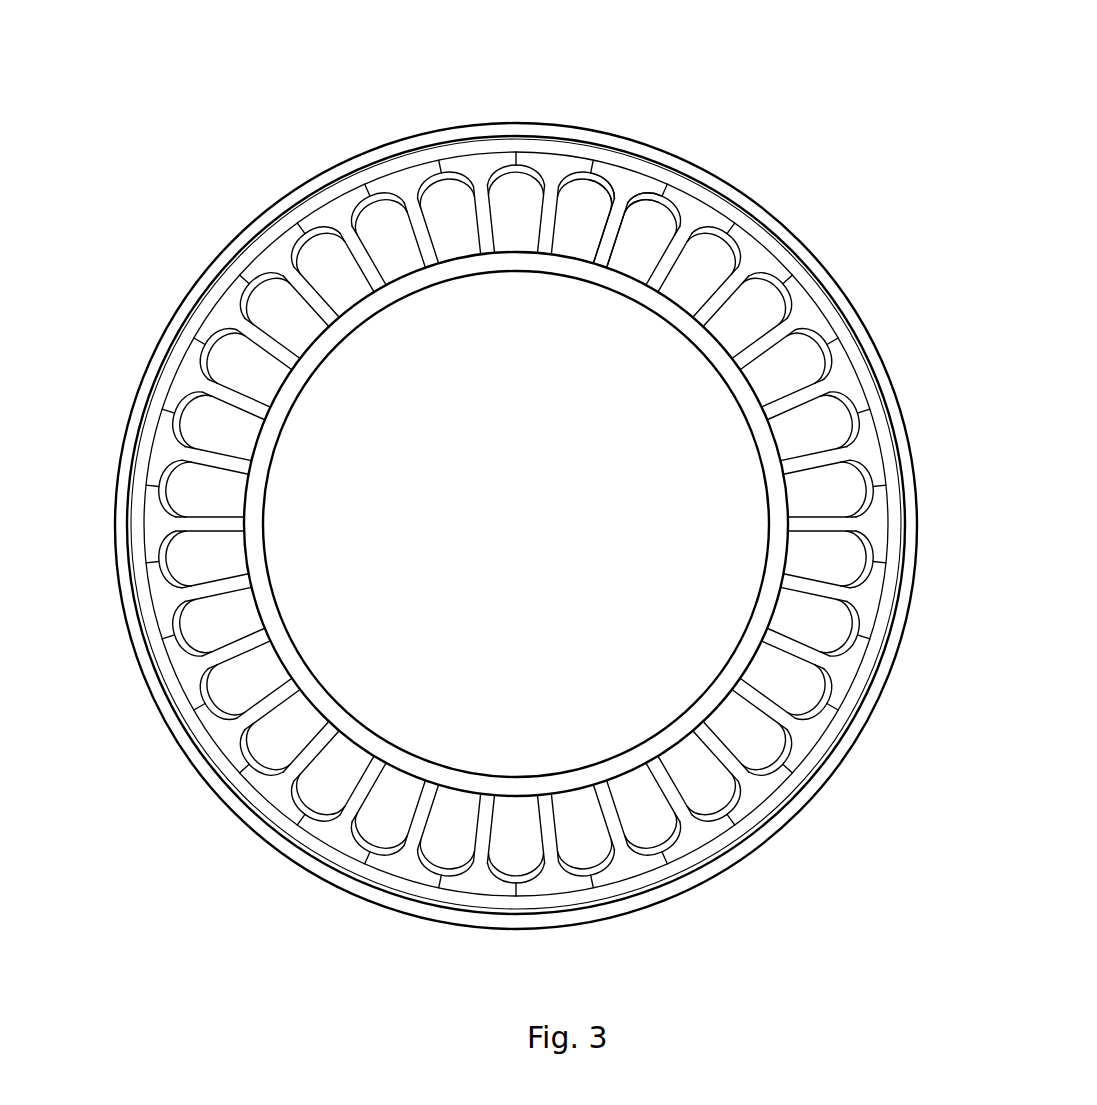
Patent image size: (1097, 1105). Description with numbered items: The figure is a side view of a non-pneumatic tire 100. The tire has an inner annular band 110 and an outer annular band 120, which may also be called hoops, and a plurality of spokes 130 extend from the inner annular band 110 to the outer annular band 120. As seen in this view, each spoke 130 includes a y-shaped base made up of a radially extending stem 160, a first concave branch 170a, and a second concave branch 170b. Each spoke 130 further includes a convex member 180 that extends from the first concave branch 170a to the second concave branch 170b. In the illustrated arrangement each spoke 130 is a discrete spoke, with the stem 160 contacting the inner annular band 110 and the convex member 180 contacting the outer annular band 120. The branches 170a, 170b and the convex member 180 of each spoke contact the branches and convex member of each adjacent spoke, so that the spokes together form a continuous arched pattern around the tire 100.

The non-pneumatic tire 100 is at (902, 106).
The inner annular band 110 is at (255, 502).
The outer annular band 120 is at (324, 176).
The spoke 130 is at (198, 350).
The radially extending stem 160 is at (600, 247).
The first concave branch 170a is at (607, 183).
The second concave branch 170b is at (642, 193).
The convex member 180 is at (635, 165).